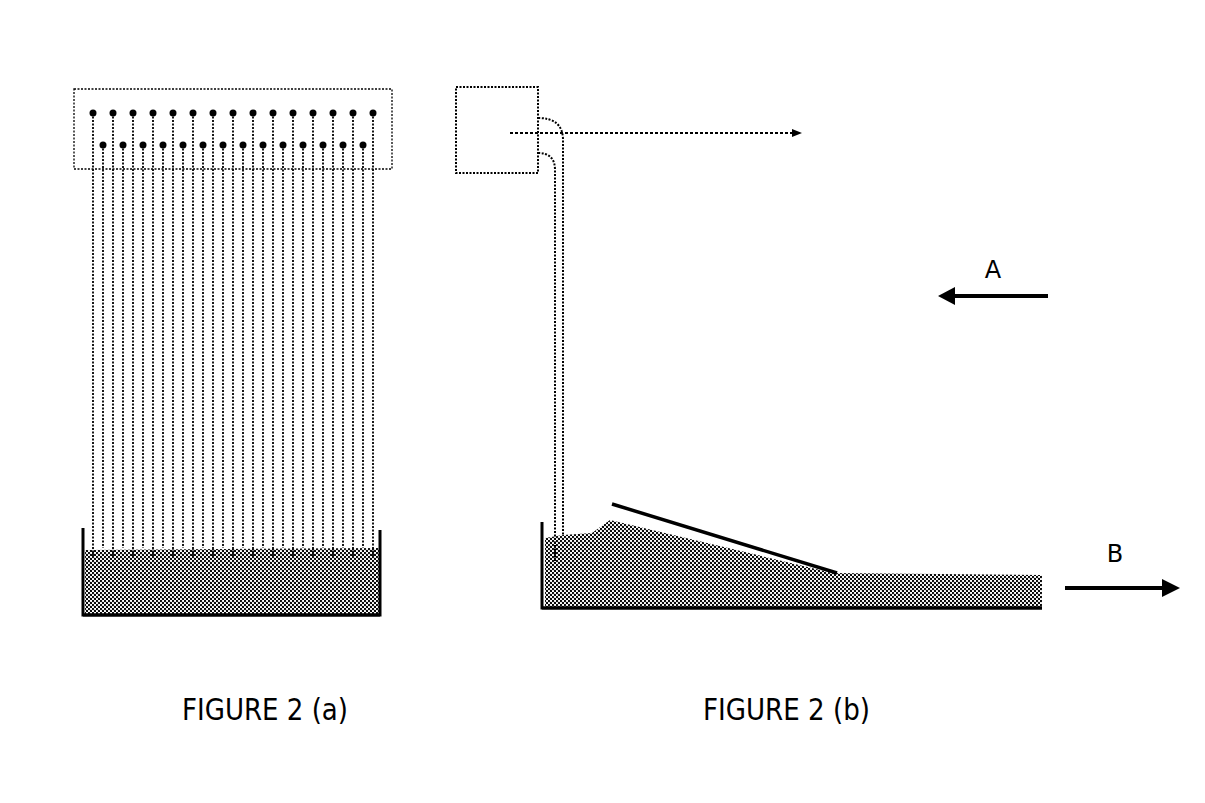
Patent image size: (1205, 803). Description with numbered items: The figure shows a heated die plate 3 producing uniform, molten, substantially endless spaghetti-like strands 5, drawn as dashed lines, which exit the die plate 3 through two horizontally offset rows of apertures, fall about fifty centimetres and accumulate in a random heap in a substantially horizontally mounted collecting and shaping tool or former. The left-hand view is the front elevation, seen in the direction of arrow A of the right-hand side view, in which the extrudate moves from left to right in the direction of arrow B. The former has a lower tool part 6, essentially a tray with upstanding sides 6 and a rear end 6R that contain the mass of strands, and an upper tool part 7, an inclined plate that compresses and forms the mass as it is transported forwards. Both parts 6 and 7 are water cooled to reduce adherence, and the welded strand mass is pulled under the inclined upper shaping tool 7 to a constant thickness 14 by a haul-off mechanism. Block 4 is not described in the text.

The heated die plate 3 is at (333, 74).
The direction of current flow 4 is at (657, 118).
The strands 5 is at (383, 350).
The lower tool part 6 is at (385, 529).
The rear end 6R is at (540, 573).
The upper tool part 7 is at (755, 537).
The constant thickness 14 is at (955, 565).